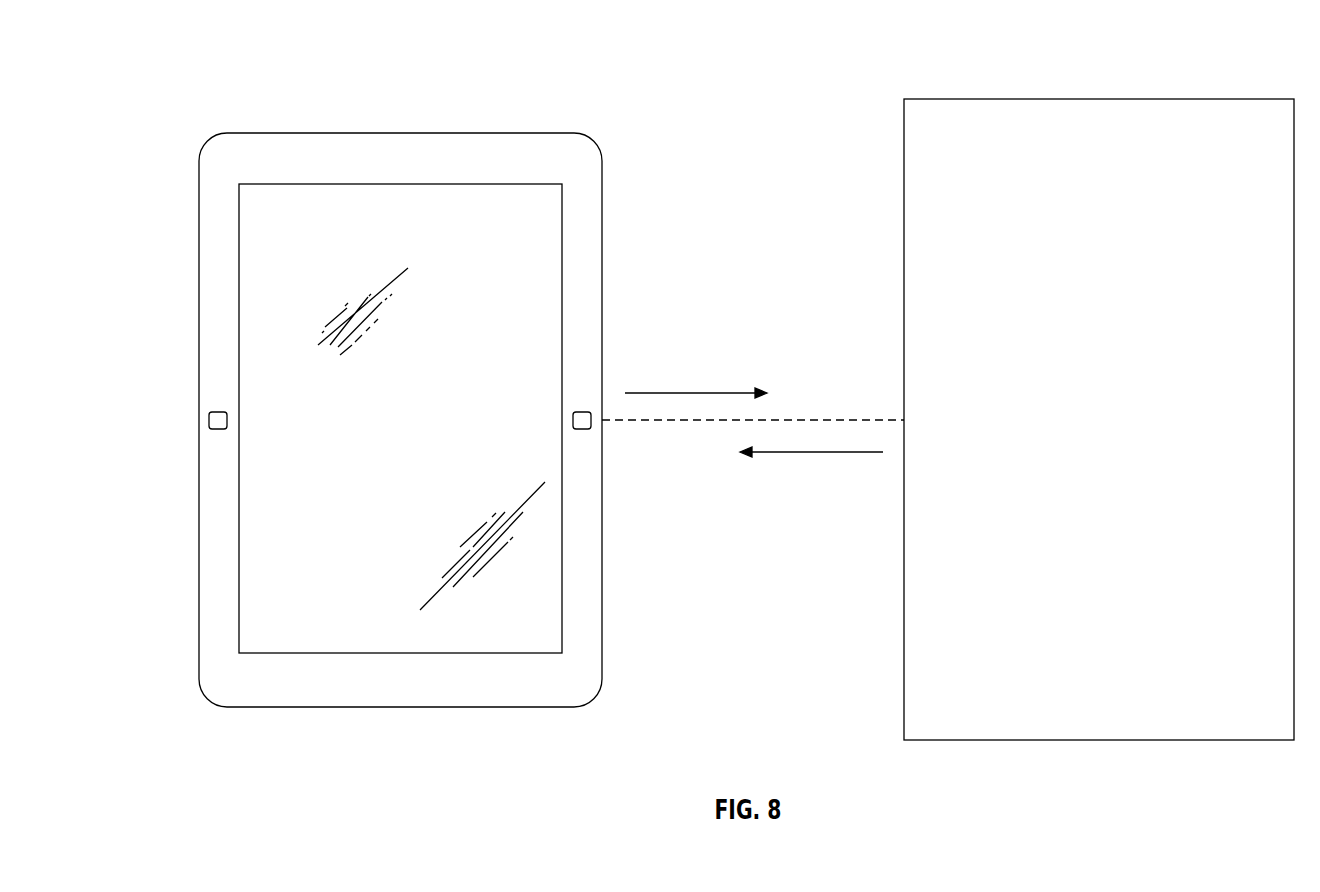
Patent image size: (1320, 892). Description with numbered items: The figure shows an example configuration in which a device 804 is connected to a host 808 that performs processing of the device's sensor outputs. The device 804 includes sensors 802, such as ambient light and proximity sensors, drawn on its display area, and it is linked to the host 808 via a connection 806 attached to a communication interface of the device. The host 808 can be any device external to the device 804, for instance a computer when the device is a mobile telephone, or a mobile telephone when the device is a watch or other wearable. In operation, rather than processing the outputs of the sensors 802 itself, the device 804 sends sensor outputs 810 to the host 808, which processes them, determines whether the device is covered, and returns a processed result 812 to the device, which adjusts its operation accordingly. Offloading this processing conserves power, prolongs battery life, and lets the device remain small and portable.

The sensors 802 is at (218, 412).
The device 804 is at (399, 132).
The connection 806 is at (688, 421).
The host 808 is at (934, 99).
The sensor outputs 810 is at (697, 391).
The processed result 812 is at (812, 452).